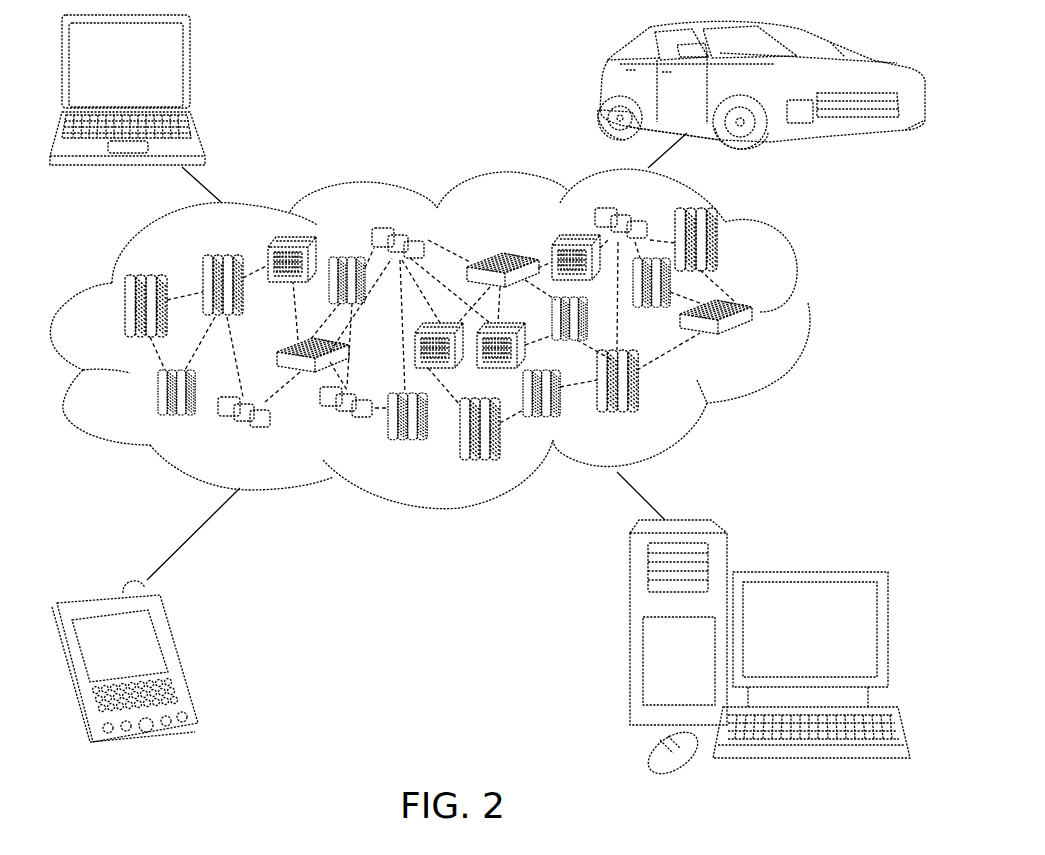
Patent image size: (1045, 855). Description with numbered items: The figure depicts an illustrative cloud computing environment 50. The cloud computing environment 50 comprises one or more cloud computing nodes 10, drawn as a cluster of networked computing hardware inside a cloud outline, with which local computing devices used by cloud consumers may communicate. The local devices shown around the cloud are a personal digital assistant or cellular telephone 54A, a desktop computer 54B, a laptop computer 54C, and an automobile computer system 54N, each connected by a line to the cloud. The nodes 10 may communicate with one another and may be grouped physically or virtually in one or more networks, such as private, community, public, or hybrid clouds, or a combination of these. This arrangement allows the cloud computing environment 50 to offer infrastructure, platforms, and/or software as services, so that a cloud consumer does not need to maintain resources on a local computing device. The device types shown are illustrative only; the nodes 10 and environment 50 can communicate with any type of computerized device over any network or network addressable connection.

The cloud computing node 10 is at (756, 340).
The cloud computing environment 50 is at (807, 315).
The personal digital assistant or cellular telephone 54A is at (183, 657).
The desktop computer 54B is at (807, 572).
The laptop computer 54C is at (191, 72).
The automobile computer system 54N is at (597, 84).